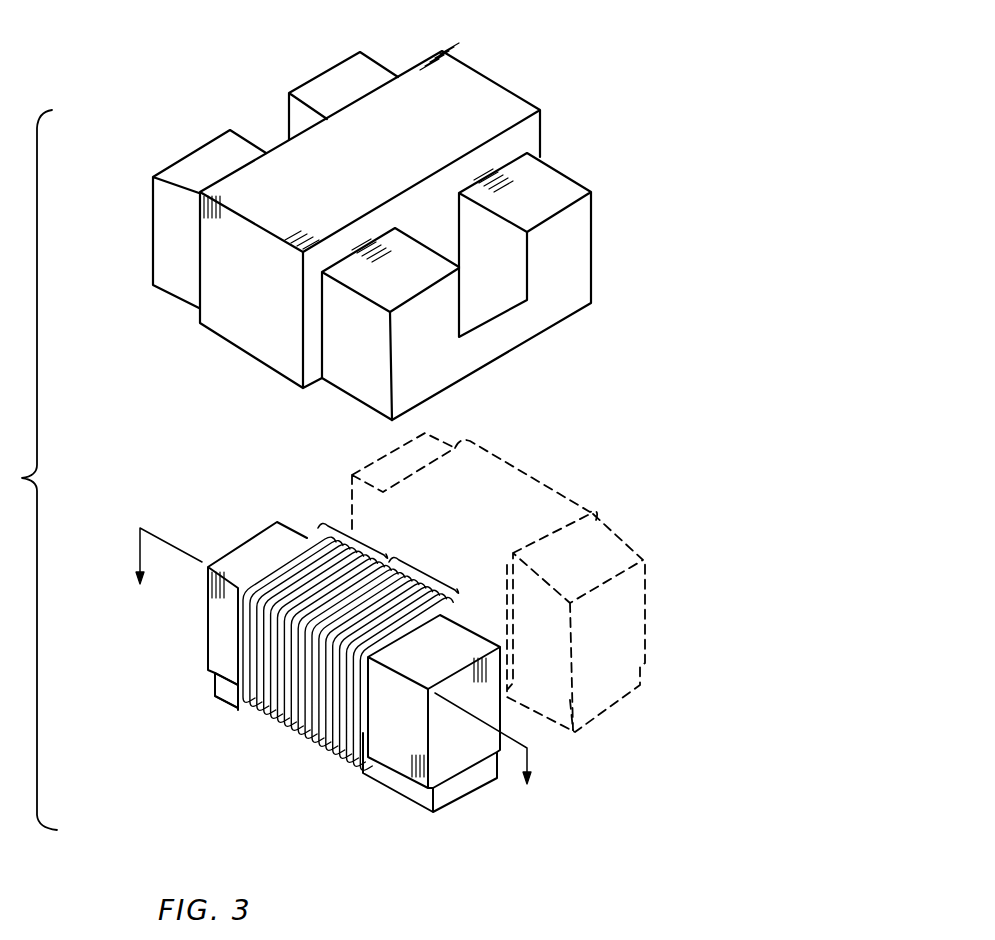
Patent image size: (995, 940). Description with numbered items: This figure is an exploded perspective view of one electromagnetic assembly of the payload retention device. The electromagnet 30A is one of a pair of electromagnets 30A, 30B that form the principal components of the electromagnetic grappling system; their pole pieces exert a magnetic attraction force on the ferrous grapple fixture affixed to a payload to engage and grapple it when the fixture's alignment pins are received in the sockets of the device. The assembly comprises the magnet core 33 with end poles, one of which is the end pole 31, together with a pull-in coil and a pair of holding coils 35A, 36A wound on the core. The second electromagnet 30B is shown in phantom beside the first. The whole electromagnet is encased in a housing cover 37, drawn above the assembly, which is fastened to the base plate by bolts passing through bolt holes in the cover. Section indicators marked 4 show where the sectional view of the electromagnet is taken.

The housing cover 37 is at (500, 83).
The electromagnet 30A is at (337, 647).
The electromagnet 30B is at (540, 470).
The end pole 31 is at (220, 688).
The magnet core 33 is at (344, 669).
The holding coil 35A is at (356, 529).
The holding coil 36A is at (424, 569).
The section line 4- 4 is at (338, 667).